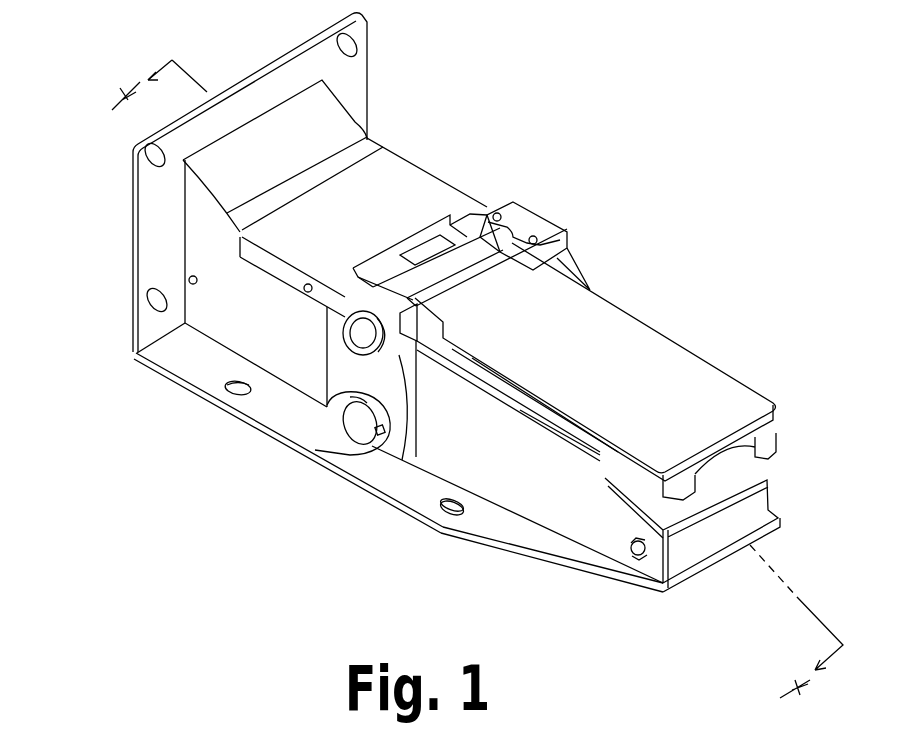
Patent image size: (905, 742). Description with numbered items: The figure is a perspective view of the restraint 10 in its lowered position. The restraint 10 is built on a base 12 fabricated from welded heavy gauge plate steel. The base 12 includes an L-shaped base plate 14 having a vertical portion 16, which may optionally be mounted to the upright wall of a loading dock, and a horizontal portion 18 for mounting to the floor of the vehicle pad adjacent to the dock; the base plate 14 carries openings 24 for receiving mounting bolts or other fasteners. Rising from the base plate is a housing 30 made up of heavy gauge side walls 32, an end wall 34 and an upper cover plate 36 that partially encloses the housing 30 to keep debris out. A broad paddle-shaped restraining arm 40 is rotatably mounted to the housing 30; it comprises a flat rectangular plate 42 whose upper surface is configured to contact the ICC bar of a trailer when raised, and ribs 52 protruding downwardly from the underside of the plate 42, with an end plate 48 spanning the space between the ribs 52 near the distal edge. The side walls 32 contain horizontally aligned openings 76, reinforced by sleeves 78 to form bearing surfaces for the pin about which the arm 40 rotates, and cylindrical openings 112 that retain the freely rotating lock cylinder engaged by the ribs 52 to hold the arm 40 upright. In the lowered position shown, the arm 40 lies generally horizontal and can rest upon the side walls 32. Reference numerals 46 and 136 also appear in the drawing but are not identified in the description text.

The restraint 10 is at (207, 62).
The base 12 is at (133, 356).
The L-shaped base plate 14 is at (390, 487).
The vertical portion 16 is at (163, 242).
The horizontal portion 18 is at (192, 362).
The openings 24 is at (455, 518).
The housing 30 is at (437, 172).
The side walls 32 is at (274, 325).
The end wall 34 is at (736, 543).
The upper cover plate 36 is at (369, 228).
The restraining arm 40 is at (687, 380).
The flat rectangular plate 42 is at (630, 347).
The notch 46 is at (750, 400).
The end plate 48 is at (725, 450).
The ribs 52 is at (603, 457).
The openings 76 is at (365, 343).
The sleeves 78 is at (528, 215).
The cylindrical openings 112 is at (343, 415).
The clamp 136 is at (547, 212).